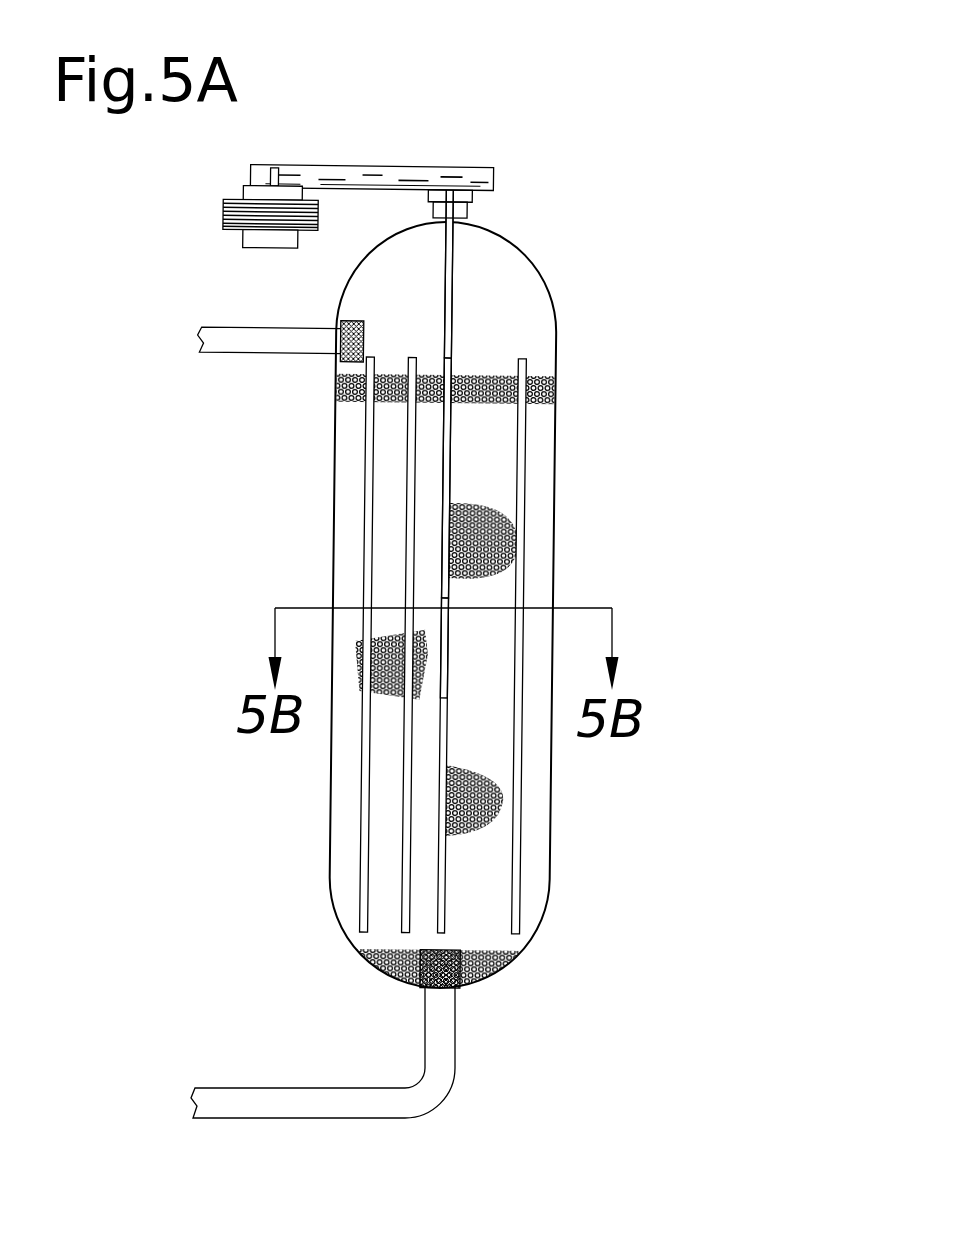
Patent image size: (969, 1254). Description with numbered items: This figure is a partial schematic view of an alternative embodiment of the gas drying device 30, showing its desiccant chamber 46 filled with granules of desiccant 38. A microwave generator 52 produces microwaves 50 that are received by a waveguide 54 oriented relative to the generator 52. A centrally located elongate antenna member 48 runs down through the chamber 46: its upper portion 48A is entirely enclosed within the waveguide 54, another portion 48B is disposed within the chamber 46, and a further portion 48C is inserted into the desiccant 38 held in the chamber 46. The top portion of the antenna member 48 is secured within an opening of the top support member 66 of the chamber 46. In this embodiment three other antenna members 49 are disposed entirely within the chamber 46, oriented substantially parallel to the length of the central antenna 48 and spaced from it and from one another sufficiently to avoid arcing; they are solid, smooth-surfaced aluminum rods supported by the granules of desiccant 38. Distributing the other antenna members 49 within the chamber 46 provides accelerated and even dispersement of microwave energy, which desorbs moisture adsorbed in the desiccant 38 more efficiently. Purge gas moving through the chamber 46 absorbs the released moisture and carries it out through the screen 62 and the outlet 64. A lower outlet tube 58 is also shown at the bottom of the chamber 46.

The gas drying device 30 is at (468, 73).
The waveguide 54 is at (263, 167).
The portion of the antenna member 48A is at (452, 170).
The microwave generator 52 is at (225, 222).
The microwaves 50 is at (330, 181).
The top support member 66 is at (470, 217).
The outlet 64 is at (235, 328).
The screen 62 is at (347, 322).
The portion of the antenna member 48B is at (453, 353).
The desiccant 38 is at (543, 378).
The other antenna members 49 is at (523, 457).
The desiccant chamber 46 is at (558, 510).
The portion of the antenna member 48C is at (447, 603).
The antenna member 48 is at (443, 852).
The outlet tube 58 is at (438, 1060).